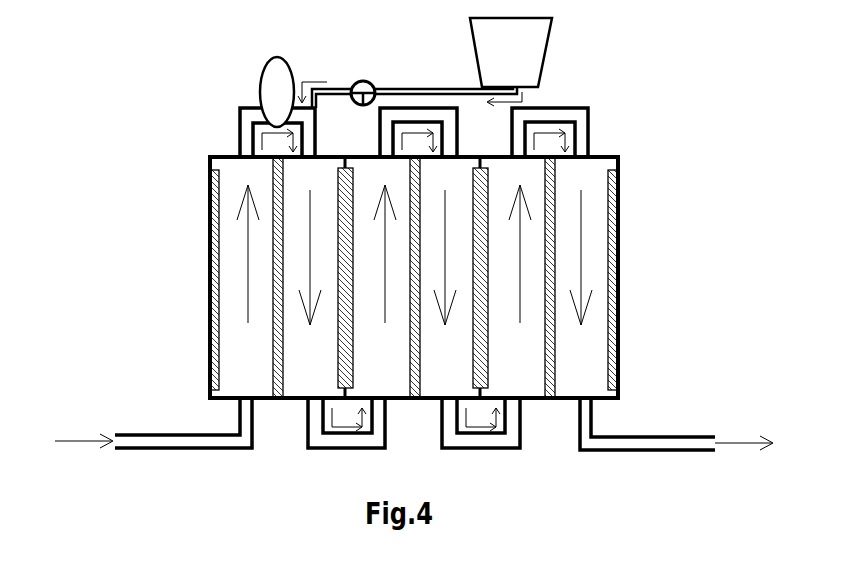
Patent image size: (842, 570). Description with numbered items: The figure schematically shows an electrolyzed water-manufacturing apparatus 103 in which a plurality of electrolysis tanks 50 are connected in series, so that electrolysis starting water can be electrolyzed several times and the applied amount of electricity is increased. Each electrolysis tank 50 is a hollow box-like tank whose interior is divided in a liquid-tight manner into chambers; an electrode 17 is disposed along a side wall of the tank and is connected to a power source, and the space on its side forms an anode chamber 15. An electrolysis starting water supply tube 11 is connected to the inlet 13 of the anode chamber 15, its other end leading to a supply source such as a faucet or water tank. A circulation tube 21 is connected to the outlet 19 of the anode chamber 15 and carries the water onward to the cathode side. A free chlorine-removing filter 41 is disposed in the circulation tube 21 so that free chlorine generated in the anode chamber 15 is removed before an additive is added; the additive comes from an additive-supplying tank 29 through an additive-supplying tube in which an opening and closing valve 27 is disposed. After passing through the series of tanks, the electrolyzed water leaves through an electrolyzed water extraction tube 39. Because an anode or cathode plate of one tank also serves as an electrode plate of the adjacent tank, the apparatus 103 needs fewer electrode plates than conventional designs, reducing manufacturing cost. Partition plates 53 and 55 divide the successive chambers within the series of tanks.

The electrolysis starting water supply tube 11 is at (198, 450).
The inlet 13 is at (245, 396).
The anode chamber 15 is at (232, 312).
The electrode 17 is at (211, 275).
The outlet 19 is at (245, 161).
The circulation tube 21 is at (240, 116).
The opening and closing valve 27 is at (370, 82).
The additive-supplying tank 29 is at (543, 62).
The electrolyzed water extraction tube 39 is at (650, 451).
The free chlorine-removing filter 41 is at (262, 58).
The electrolysis tank 50 is at (187, 240).
The partition plate 53 is at (347, 373).
The partition plate 55 is at (487, 362).
The electrolyzed water-manufacturing apparatus 103 is at (320, 57).